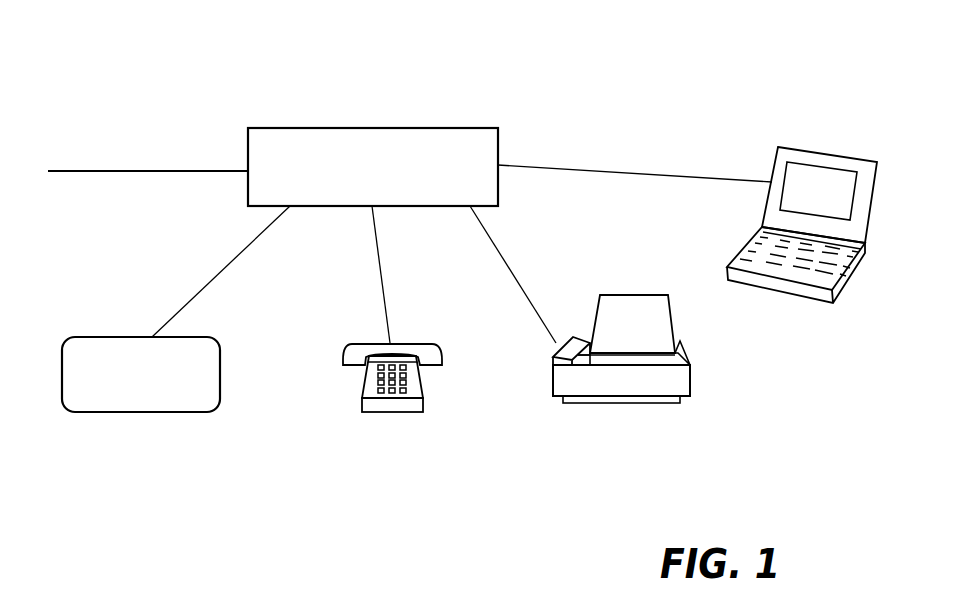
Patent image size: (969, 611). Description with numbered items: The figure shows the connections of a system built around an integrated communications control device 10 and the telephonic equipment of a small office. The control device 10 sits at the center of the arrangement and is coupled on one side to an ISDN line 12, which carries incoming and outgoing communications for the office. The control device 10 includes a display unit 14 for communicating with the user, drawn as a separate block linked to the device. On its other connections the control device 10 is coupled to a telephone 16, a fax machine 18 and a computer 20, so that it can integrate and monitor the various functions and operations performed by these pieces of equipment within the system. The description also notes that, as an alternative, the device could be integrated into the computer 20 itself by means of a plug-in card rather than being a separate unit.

The integrated communications control device 10 is at (388, 128).
The ISDN line 12 is at (148, 172).
The display unit 14 is at (122, 337).
The telephone 16 is at (422, 385).
The fax machine 18 is at (688, 353).
The computer 20 is at (772, 178).